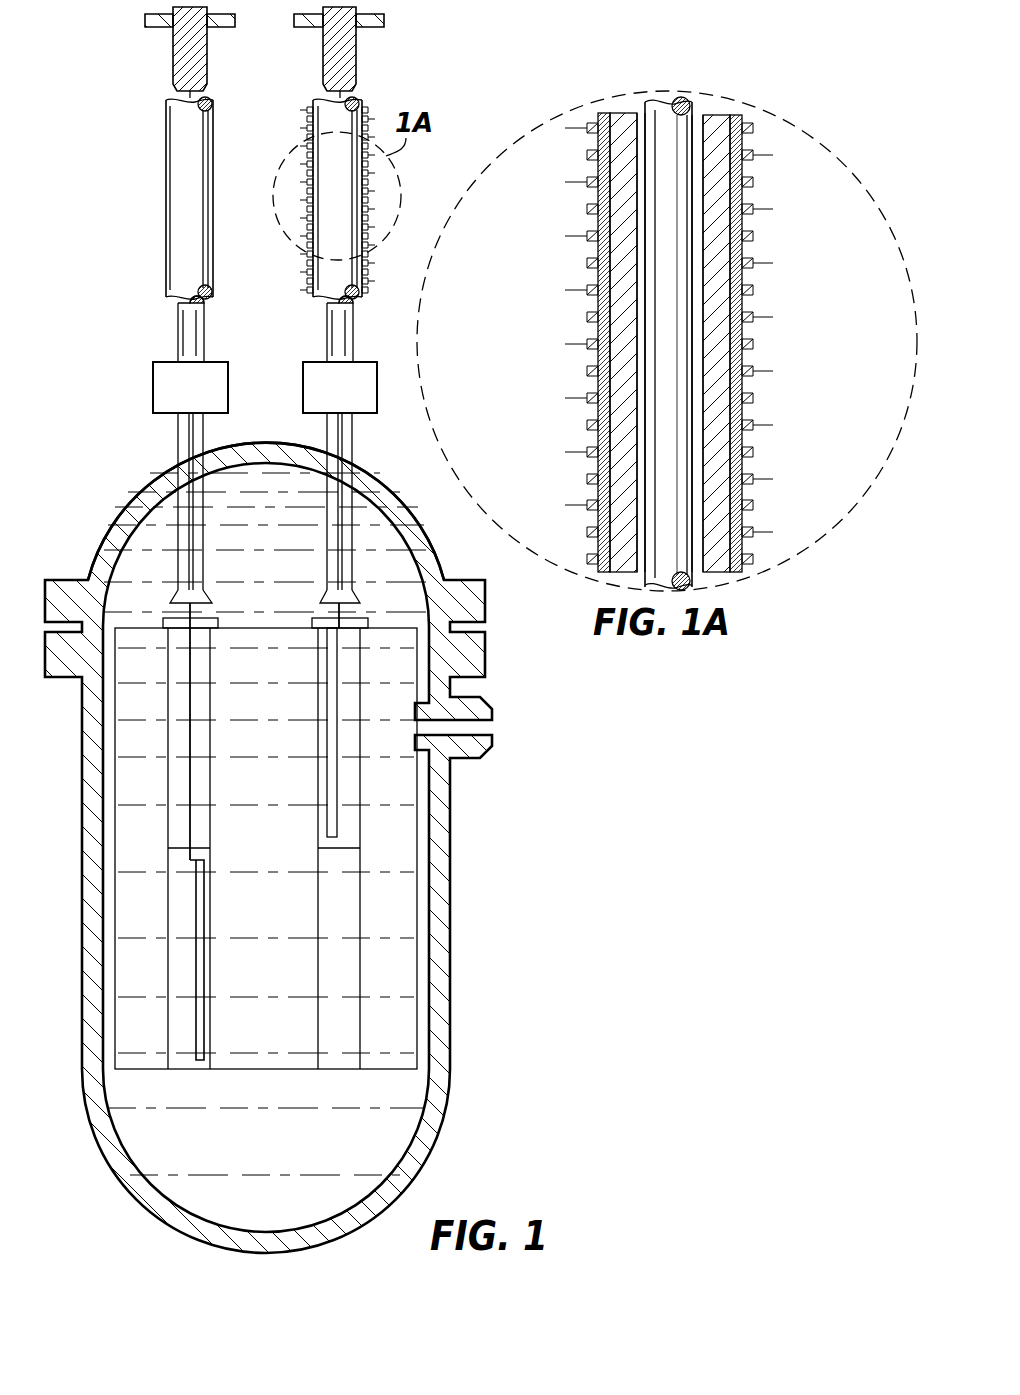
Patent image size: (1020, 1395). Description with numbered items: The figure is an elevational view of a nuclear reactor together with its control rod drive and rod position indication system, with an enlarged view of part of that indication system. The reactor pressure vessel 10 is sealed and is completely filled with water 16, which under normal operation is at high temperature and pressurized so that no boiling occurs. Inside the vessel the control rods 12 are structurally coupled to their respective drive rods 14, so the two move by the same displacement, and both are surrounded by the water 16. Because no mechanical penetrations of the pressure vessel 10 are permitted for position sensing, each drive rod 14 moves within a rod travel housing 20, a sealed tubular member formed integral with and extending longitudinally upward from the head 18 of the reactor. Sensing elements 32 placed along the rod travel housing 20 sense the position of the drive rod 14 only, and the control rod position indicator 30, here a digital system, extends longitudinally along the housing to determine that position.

In FIG. 1, the reactor pressure vessel 10 is at (516, 984).
In FIG. 1, the control rod 12 is at (196, 915).
In FIG. 1, the drive rod 14 is at (178, 446).
In FIG. 1A, the drive rod 14 is at (652, 105).
In FIG. 1, the water 16 is at (395, 818).
In FIG. 1, the head of the reactor 18 is at (257, 442).
In FIG. 1, the rod travel housing 20 is at (323, 48).
In FIG. 1A, the rod travel housing 20 is at (713, 115).
In FIG. 1, the control rod position indicator 30 is at (250, 176).
In FIG. 1A, the control rod position indicator 30 is at (551, 274).
In FIG. 1, the sensing element 32 is at (313, 118).
In FIG. 1A, the sensing element 32 is at (753, 155).